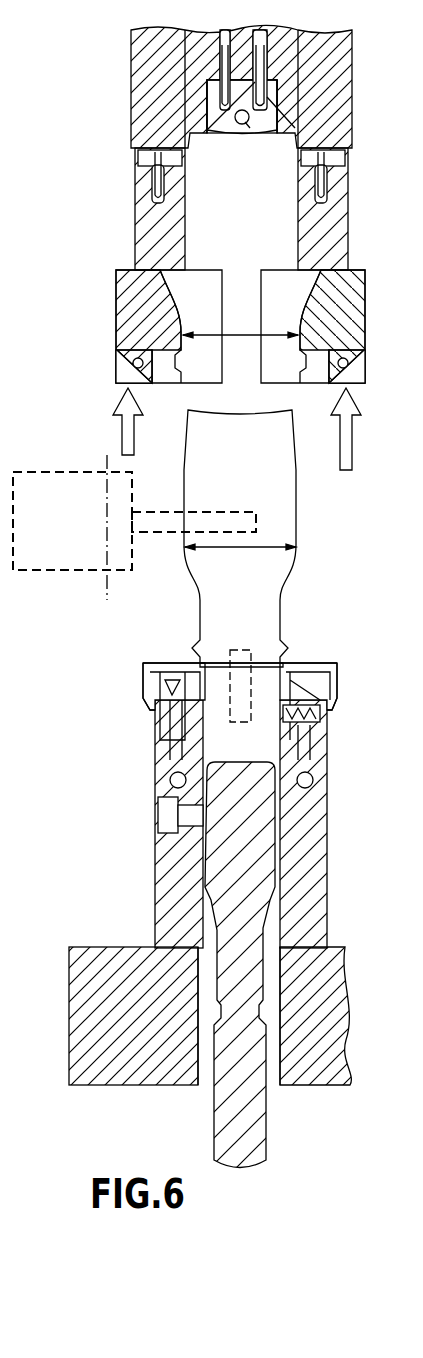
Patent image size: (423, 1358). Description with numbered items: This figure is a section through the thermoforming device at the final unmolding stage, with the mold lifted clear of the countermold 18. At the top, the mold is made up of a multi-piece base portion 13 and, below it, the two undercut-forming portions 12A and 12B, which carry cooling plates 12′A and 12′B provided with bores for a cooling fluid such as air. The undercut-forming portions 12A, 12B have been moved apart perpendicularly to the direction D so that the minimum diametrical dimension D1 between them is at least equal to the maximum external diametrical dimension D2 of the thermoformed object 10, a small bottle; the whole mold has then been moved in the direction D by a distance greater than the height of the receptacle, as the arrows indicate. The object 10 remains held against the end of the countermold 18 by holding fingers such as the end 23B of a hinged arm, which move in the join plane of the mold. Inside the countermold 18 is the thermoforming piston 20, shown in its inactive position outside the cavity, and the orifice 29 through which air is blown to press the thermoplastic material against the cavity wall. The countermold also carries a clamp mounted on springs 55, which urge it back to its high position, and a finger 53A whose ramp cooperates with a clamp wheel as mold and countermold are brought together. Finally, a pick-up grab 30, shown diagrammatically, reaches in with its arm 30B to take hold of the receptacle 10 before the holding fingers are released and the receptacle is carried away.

The base portion 13 is at (107, 145).
The undercut-forming portion 12A is at (125, 316).
The undercut-forming portion 12B is at (355, 313).
The cooling plate 12′A is at (125, 367).
The cooling plate 12′B is at (358, 366).
The object 10 is at (185, 470).
The grab 30 is at (164, 557).
The arm of the grab 30B is at (236, 514).
The end of hinged arm (holding finger) 23B is at (246, 648).
The finger 53A is at (183, 661).
The springs 55 is at (320, 714).
The thermoforming piston 20 is at (236, 760).
The orifice 29 is at (165, 816).
The countermold 18 is at (318, 843).
The direction of piston movement D is at (350, 447).
The minimum diametrical dimensions D1 is at (240, 324).
The maximum external diametrical dimensions D2 is at (240, 560).